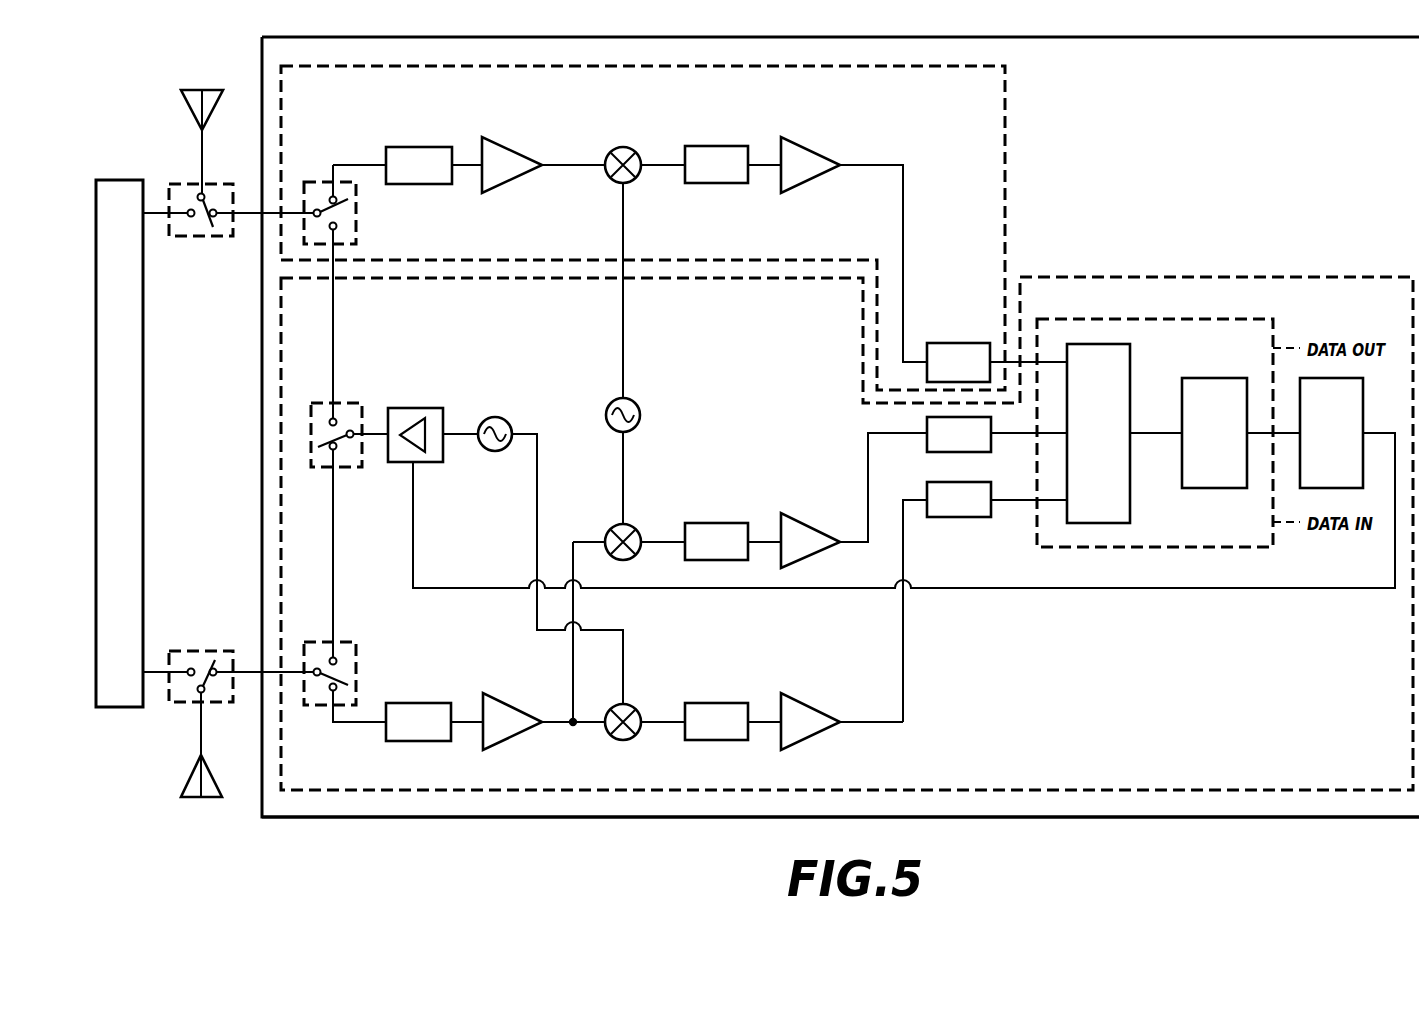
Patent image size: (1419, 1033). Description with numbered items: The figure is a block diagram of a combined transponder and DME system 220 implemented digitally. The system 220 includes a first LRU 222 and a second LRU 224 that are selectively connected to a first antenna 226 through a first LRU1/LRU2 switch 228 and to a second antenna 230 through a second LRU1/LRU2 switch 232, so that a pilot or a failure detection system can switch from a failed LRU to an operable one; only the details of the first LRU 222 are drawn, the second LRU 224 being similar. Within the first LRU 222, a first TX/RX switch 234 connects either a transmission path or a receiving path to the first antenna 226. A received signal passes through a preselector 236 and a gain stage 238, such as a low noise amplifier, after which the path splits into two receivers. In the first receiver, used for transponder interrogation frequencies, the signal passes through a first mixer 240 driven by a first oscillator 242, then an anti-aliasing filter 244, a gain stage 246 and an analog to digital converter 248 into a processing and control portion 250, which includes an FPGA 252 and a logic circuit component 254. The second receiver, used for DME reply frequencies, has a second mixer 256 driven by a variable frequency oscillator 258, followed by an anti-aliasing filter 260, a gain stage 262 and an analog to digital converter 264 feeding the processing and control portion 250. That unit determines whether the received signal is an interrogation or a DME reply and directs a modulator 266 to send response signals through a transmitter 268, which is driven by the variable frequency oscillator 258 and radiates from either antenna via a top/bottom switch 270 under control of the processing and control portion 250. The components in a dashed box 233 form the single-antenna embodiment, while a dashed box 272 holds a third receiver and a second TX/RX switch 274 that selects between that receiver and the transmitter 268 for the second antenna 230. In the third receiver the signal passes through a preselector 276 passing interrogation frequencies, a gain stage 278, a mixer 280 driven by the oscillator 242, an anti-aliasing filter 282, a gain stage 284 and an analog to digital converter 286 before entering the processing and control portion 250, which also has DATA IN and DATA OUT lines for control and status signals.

The combined transponder and DME system 220 is at (156, 62).
The first LRU 222 is at (333, 817).
The second LRU 224 is at (133, 464).
The first antenna 226 is at (192, 773).
The first LRU1/LRU2 switch 228 is at (190, 651).
The second antenna 230 is at (193, 112).
The second LRU1/LRU2 switch 232 is at (191, 237).
The dashed box 233 is at (1396, 311).
The first TX/RX switch 234 is at (358, 652).
The preselector 236 is at (404, 736).
The gain stage 238 is at (508, 736).
The first mixer 240 is at (610, 530).
The first oscillator 242 is at (640, 419).
The anti-aliasing filter 244 is at (701, 556).
The gain stage 246 is at (806, 556).
The analog to digital converter 248 is at (944, 448).
The processing and control portion 250 is at (1252, 356).
The field programmable gate array (FPGA) 252 is at (1083, 447).
The logic circuit component 254 is at (1199, 447).
The second mixer 256 is at (611, 734).
The variable frequency oscillator 258 is at (508, 421).
The anti-aliasing filter 260 is at (701, 736).
The gain stage 262 is at (806, 736).
The analog to digital converter 264 is at (944, 513).
The modulator 266 is at (1316, 447).
The transmitter 268 is at (435, 408).
The top/bottom switch 270 is at (342, 403).
The dashed box 272 is at (990, 105).
The second TX/RX switch 274 is at (358, 225).
The preselector 276 is at (404, 179).
The gain stage 278 is at (507, 179).
The mixer 280 is at (611, 153).
The anti-aliasing filter 282 is at (701, 179).
The gain stage 284 is at (806, 179).
The analog to digital converter 286 is at (943, 376).